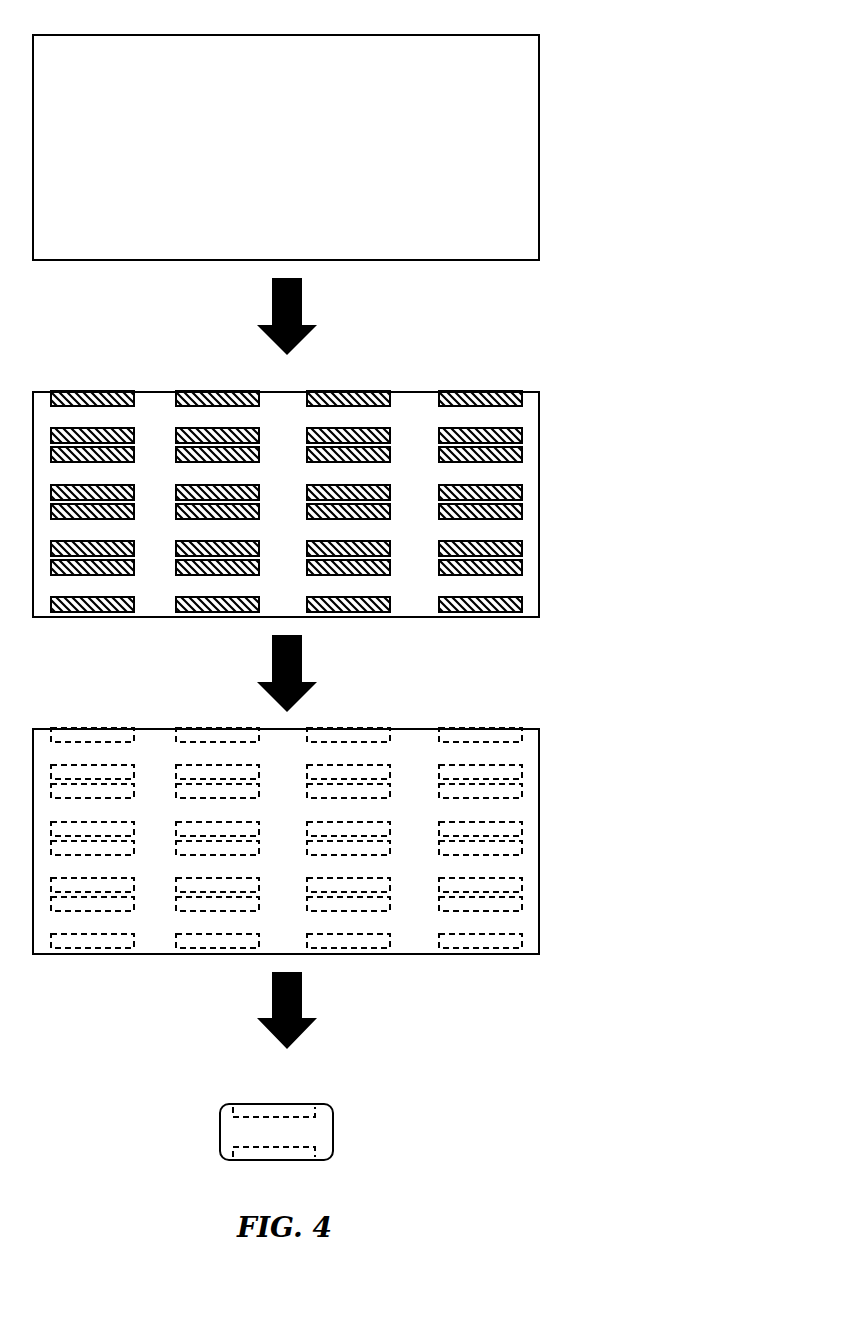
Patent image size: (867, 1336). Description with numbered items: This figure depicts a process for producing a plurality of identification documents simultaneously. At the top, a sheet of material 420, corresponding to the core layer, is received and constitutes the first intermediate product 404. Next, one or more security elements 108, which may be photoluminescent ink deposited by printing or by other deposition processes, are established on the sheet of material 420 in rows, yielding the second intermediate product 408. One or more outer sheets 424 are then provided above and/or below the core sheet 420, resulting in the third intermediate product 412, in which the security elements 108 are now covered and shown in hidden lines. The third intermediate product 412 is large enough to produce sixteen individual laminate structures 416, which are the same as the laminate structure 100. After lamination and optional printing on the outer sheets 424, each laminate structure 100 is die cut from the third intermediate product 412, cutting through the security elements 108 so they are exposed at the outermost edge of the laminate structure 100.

The laminate structure 100 is at (207, 1122).
The security element 108 is at (485, 430).
The first intermediate product 404 is at (590, 148).
The second intermediate product 408 is at (383, 493).
The third intermediate product 412 is at (383, 853).
The individual laminate structure 416 is at (428, 1112).
The sheet of material 420 is at (521, 203).
The outer sheet 424 is at (539, 917).